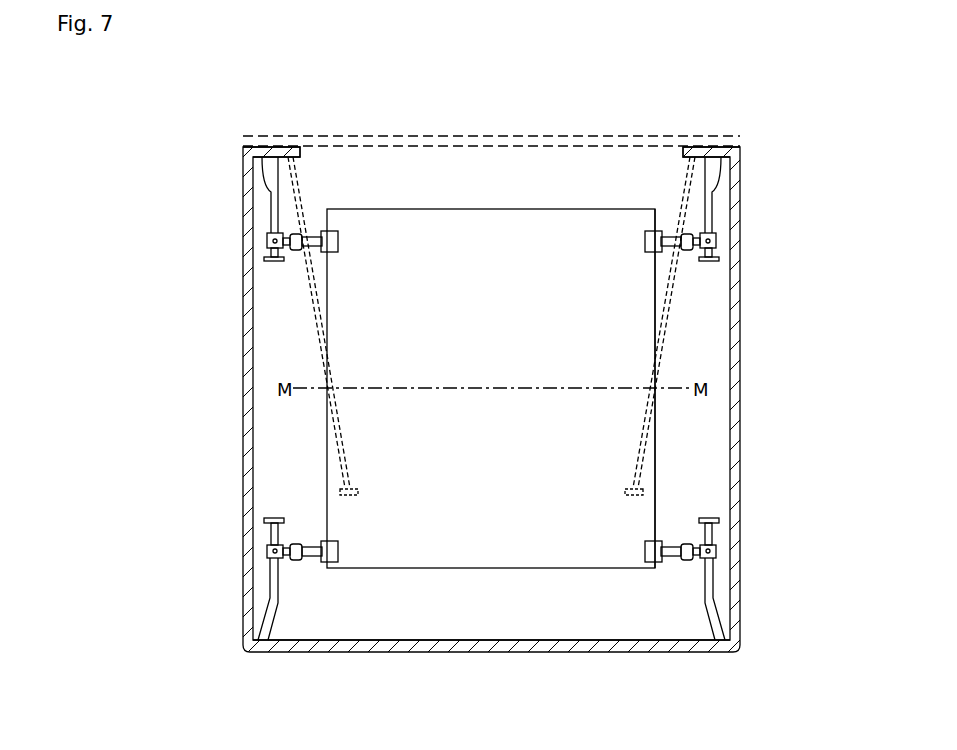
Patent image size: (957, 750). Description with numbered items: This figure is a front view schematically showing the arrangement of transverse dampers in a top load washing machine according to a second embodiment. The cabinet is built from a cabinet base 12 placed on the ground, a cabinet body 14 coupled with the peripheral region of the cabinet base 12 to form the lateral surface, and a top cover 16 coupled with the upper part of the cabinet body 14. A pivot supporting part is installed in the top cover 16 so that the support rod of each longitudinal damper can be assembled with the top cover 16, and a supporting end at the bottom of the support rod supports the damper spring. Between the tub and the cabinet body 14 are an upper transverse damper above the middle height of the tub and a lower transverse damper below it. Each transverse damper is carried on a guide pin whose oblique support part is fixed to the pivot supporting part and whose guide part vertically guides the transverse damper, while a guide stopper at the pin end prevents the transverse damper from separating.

The cabinet base 12 is at (653, 644).
The cabinet body 14 is at (736, 391).
The top cover 16 is at (550, 143).